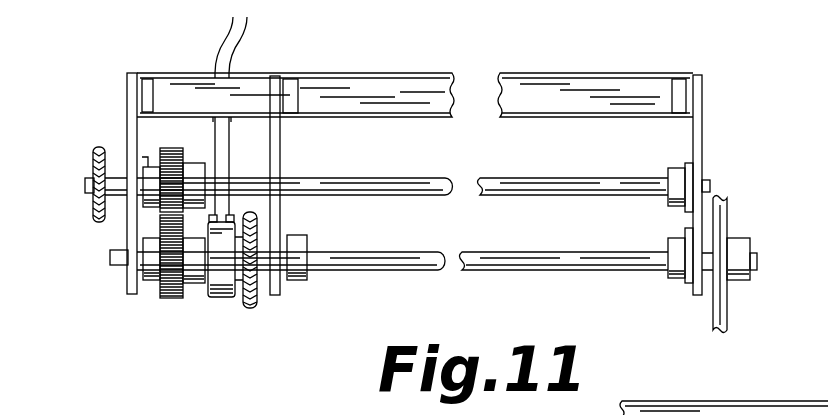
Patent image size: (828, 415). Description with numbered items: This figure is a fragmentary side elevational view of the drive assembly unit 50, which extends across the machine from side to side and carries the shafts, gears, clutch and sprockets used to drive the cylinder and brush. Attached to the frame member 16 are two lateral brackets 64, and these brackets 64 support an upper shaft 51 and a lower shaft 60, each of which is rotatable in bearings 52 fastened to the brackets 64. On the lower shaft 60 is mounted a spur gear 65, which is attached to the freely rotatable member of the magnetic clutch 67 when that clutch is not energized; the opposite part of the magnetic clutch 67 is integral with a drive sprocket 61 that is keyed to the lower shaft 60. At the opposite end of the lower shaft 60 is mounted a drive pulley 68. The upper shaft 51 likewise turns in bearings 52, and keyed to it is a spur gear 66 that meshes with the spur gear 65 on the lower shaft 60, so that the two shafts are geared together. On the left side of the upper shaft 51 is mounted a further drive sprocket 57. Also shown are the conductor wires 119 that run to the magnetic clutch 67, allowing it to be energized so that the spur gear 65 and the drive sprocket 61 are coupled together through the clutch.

The frame member 16 is at (573, 73).
The lateral bracket 64 is at (127, 125).
The bearing 52 is at (152, 167).
The spur gear 66 is at (172, 148).
The spur gear 65 is at (166, 300).
The upper shaft 51 is at (378, 178).
The lower shaft 60 is at (325, 270).
The drive sprocket 57 is at (93, 222).
The magnetic clutch 67 is at (222, 299).
The drive sprocket 61 is at (250, 309).
The conductor wires 119 is at (242, 54).
The drive pulley 68 is at (730, 310).
The drive assembly unit 50 is at (128, 320).